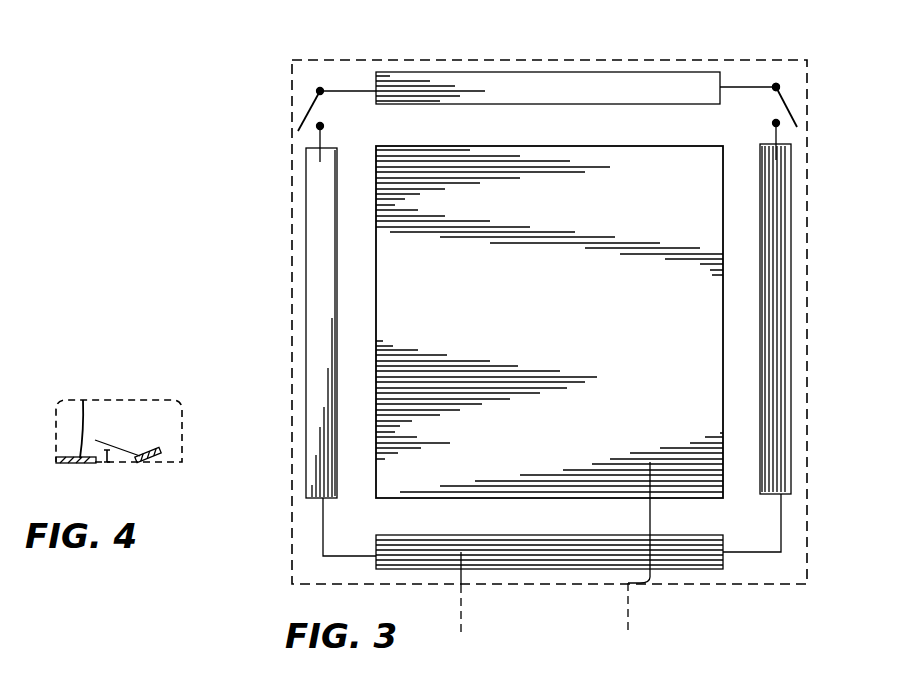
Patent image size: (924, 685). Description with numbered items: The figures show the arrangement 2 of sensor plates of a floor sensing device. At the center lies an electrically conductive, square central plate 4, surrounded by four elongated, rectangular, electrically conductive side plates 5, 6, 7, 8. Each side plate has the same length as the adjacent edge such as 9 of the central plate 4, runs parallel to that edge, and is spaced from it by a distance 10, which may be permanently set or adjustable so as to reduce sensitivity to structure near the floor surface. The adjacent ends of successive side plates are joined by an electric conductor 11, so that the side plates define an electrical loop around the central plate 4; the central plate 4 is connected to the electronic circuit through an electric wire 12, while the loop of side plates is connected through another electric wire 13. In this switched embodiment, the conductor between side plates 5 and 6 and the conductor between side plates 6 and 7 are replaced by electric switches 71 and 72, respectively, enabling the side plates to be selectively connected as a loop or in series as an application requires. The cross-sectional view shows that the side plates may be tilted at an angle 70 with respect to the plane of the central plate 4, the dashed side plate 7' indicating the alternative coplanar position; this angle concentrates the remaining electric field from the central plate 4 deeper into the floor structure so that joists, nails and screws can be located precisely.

In FIG. 3, the arrangement of sensor plates 2 is at (790, 58).
In FIG. 4, the arrangement of sensor plates 2 is at (170, 400).
In FIG. 3, the central plate 4 is at (396, 326).
In FIG. 4, the central plate 4 is at (76, 419).
In FIG. 3, the side plate 5 is at (318, 258).
In FIG. 3, the side plate 6 is at (680, 70).
In FIG. 3, the side plate 7 is at (792, 307).
In FIG. 4, the side plate 7 is at (174, 437).
In FIG. 4, the side plate (coplanar position) 7' is at (165, 485).
In FIG. 3, the side plate 8 is at (703, 557).
In FIG. 3, the edge of the central plate 9 is at (725, 282).
In FIG. 3, the distance 10 is at (725, 405).
In FIG. 3, the electric conductor 11 is at (781, 518).
In FIG. 3, the electric wire 12 is at (628, 590).
In FIG. 3, the electric wire 13 is at (462, 590).
In FIG. 4, the angle 70 is at (107, 462).
In FIG. 3, the electric switch 71 is at (310, 107).
In FIG. 3, the electric switch 72 is at (788, 108).